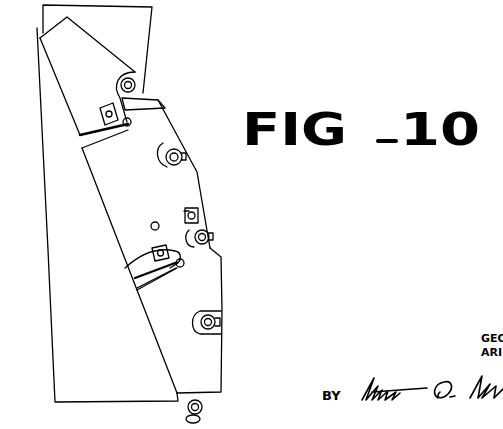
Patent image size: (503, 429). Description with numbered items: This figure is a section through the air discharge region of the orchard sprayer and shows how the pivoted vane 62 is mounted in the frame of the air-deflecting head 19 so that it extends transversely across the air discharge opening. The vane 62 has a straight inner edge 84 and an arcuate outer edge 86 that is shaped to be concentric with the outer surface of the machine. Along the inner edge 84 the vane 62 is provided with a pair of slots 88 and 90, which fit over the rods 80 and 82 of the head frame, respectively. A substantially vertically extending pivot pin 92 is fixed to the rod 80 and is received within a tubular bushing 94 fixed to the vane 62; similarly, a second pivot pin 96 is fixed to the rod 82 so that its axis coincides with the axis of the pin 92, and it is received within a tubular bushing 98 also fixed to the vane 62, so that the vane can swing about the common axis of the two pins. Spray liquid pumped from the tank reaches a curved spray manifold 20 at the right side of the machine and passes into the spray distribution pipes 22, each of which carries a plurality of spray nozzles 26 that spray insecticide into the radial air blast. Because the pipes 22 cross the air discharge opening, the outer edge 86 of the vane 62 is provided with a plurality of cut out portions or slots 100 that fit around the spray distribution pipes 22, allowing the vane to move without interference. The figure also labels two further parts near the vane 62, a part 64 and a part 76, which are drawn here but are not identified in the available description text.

The air-deflecting head 19 is at (233, 263).
The spray manifold 20 is at (61, 26).
The spray distribution pipes 22 is at (138, 88).
The spray nozzles 26 is at (135, 80).
The vane 62 is at (147, 205).
The fastener 64 is at (203, 212).
The fastener 76 is at (184, 212).
The rod 80 is at (129, 126).
The rod 82 is at (170, 276).
The inner edge 84 is at (103, 210).
The outer edge 86 is at (204, 181).
The slot 88 is at (82, 146).
The slot 90 is at (133, 280).
The pivot pin 92 is at (133, 115).
The tubular bushing 94 is at (118, 105).
The pivot pin 96 is at (180, 265).
The tubular bushing 98 is at (125, 268).
The cut out portions or slots 100 is at (153, 100).